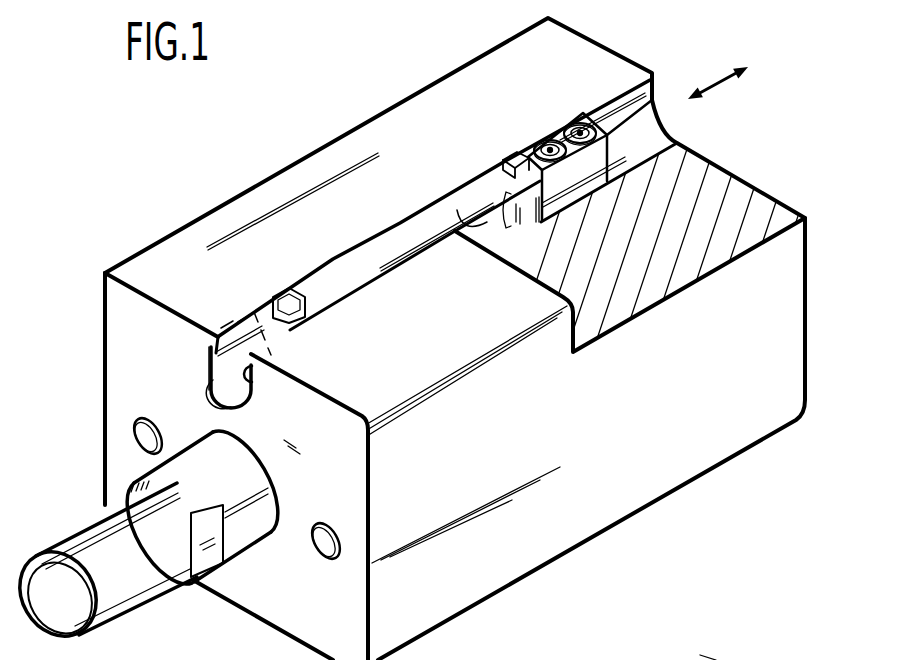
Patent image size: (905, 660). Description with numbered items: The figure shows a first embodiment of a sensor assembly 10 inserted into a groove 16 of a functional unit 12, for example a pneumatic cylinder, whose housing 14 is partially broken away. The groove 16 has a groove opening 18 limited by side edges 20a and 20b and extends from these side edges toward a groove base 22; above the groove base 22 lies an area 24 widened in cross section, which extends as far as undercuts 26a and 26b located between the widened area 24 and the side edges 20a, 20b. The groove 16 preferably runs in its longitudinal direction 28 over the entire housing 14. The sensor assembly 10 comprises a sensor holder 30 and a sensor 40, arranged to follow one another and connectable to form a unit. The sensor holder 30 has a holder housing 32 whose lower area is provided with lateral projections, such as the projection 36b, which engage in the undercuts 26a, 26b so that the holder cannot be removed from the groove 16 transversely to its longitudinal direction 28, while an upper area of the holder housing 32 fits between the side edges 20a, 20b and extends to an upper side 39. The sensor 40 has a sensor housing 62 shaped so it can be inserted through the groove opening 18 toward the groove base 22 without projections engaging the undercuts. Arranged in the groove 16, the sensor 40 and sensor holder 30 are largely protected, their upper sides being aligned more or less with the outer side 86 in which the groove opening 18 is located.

The sensor assembly 10 is at (444, 165).
The functional unit 12 is at (728, 425).
The housing 14 is at (147, 263).
The groove 16 is at (243, 306).
The groove opening 18 is at (226, 310).
The side edge 20a is at (252, 300).
The side edge 20b is at (300, 322).
The groove base 22 is at (233, 405).
The widened area 24 is at (210, 374).
The undercut 26a is at (208, 350).
The undercut 26b is at (254, 378).
The longitudinal direction 28 is at (744, 74).
The sensor holder 30 is at (560, 121).
The holder housing 32 is at (615, 140).
The lateral projection 36b is at (648, 150).
The upper side 39 is at (708, 659).
The sensor 40 is at (395, 193).
The sensor housing 62 is at (440, 170).
The outer side 86 is at (362, 218).